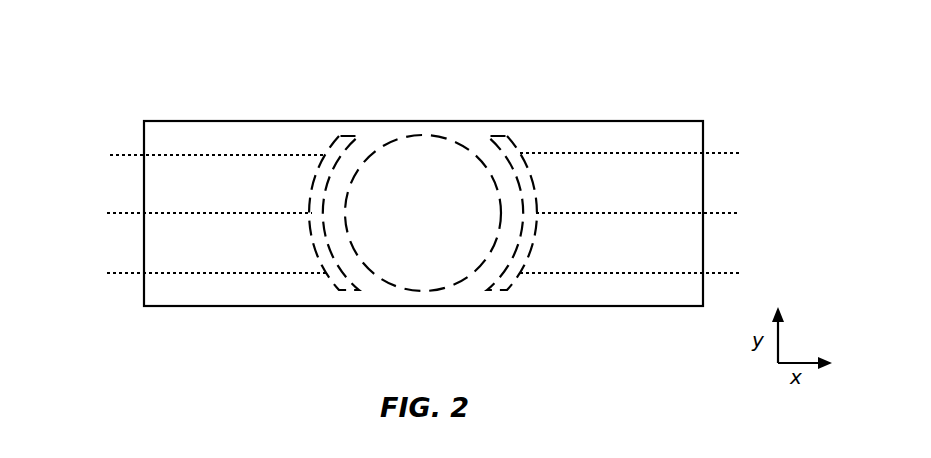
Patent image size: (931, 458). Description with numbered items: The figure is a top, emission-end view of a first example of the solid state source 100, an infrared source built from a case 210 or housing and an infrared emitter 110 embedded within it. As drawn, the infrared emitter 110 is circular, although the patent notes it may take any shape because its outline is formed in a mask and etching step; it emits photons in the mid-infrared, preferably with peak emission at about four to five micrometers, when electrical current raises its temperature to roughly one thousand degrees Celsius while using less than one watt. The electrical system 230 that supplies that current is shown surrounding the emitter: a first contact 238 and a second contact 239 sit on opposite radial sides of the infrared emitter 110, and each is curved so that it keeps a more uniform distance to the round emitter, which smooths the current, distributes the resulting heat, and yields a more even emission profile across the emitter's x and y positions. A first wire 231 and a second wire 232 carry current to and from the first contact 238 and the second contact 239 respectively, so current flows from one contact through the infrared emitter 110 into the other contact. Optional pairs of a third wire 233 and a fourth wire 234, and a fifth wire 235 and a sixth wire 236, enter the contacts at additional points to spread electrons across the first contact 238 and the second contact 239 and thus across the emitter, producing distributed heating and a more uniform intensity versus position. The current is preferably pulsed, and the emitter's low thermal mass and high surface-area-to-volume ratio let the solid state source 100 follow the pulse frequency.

The solid state source 100 is at (184, 42).
The infrared emitter 110 is at (447, 137).
The case 210 is at (667, 120).
The electrical system 230 is at (422, 185).
The first wire 231 is at (125, 212).
The second wire 232 is at (722, 212).
The third wire 233 is at (128, 154).
The fourth wire 234 is at (722, 152).
The fifth wire 235 is at (128, 272).
The sixth wire 236 is at (722, 272).
The first contact 238 is at (311, 176).
The second contact 239 is at (536, 176).